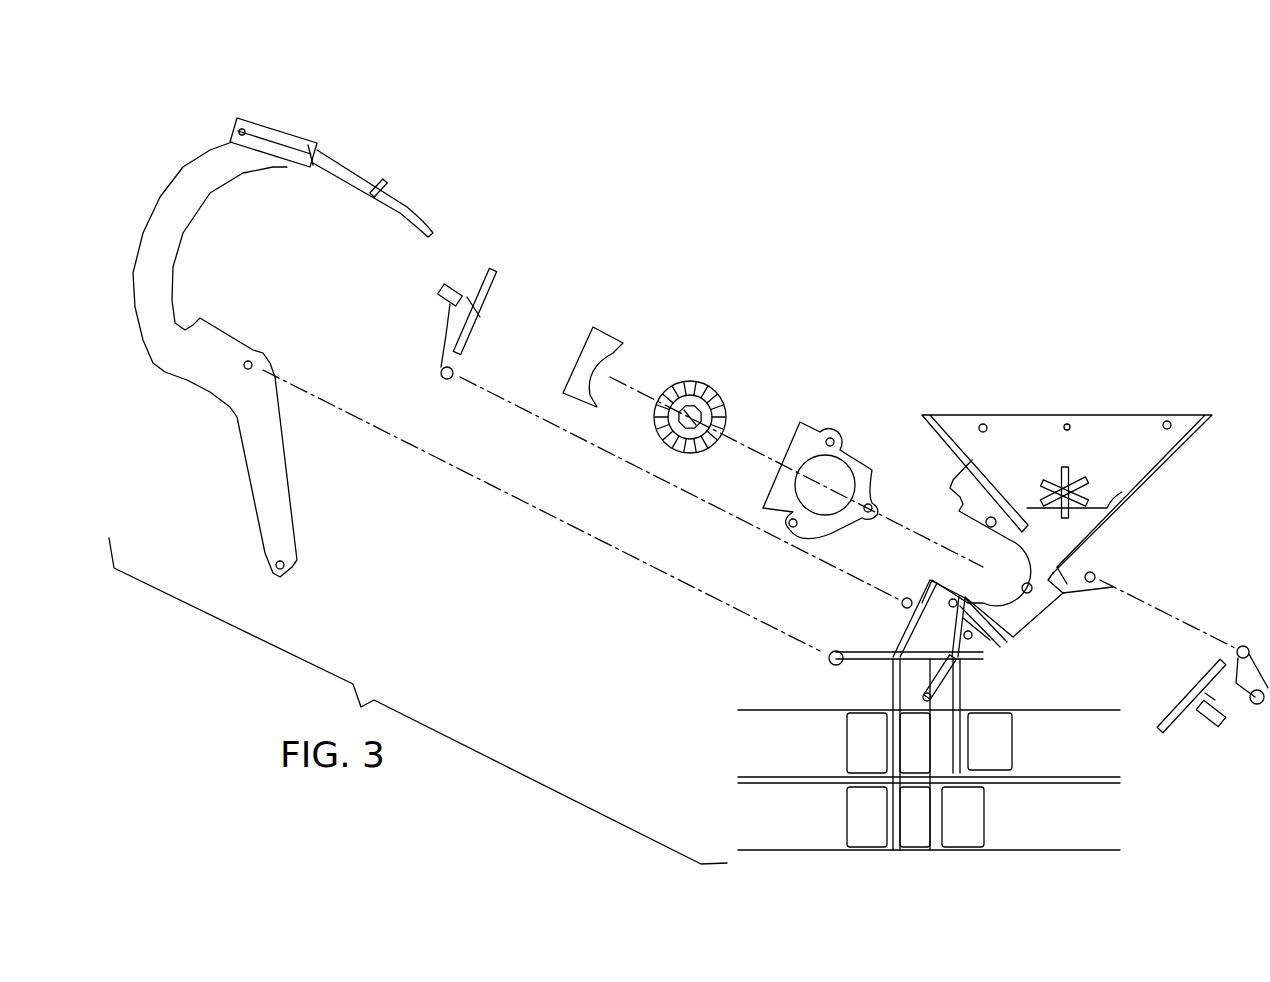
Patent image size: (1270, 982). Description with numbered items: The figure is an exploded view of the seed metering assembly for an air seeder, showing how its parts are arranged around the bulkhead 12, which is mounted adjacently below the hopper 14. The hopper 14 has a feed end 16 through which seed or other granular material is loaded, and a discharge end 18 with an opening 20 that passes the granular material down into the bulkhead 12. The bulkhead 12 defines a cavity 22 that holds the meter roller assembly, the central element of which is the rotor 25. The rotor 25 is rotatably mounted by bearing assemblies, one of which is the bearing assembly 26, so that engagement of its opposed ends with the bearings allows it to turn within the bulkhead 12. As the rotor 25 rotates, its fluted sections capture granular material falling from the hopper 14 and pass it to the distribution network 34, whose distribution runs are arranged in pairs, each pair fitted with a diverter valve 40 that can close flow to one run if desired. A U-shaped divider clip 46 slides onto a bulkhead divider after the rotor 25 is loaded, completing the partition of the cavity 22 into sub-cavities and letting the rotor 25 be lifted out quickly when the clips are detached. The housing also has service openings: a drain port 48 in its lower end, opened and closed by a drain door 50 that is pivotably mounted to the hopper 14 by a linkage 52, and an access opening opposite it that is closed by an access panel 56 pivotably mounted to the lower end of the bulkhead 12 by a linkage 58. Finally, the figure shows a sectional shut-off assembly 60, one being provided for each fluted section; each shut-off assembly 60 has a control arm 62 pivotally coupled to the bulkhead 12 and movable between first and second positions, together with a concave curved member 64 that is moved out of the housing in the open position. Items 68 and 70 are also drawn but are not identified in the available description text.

The bulkhead 12 is at (903, 630).
The hopper 14 is at (1202, 433).
The feed end 16 is at (1090, 474).
The discharge end 18 is at (1105, 498).
The opening 20 is at (1068, 523).
The cavity 22 is at (1018, 607).
The rotor 25 is at (701, 395).
The bearing assembly 26 is at (798, 445).
The distribution network 34 is at (821, 820).
The diverter valve 40 is at (927, 687).
The divider clip 46 is at (601, 340).
The drain port 48 is at (1032, 627).
The drain door 50 is at (1173, 727).
The linkage 52 is at (1242, 710).
The access panel 56 is at (497, 287).
The linkage 58 is at (443, 323).
The shut-off assembly 60 is at (294, 347).
The control arm 62 is at (163, 362).
The concave curved member 64 is at (420, 210).
The flange 68 is at (997, 640).
The spring pin 70 is at (1057, 480).